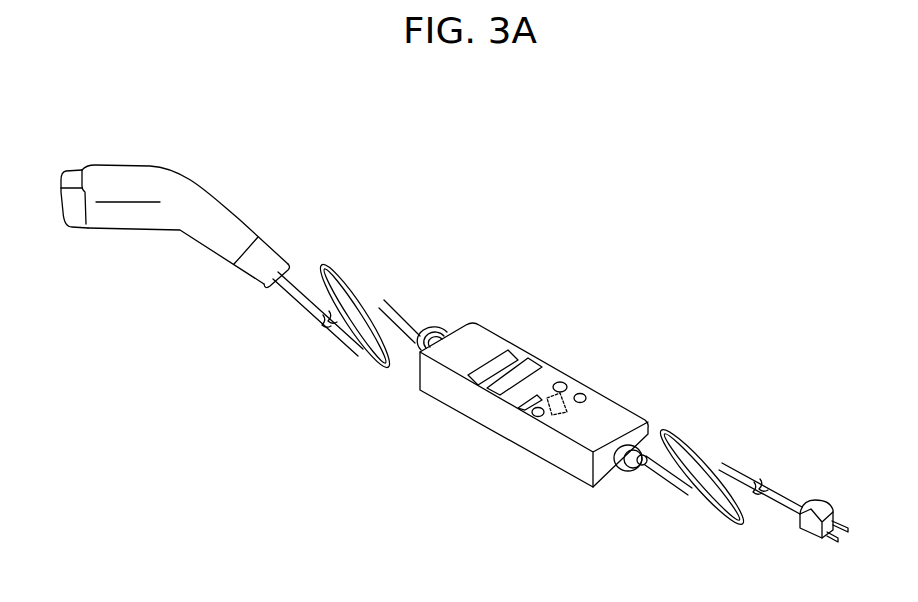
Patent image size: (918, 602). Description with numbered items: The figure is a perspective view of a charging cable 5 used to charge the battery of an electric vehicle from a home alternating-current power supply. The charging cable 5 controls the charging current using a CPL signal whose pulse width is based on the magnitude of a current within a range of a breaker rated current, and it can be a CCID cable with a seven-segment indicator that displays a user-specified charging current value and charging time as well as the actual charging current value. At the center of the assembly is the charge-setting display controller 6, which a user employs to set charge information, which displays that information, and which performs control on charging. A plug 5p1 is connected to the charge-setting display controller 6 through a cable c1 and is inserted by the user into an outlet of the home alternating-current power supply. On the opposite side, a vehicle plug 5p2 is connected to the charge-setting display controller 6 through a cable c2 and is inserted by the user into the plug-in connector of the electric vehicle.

The charging cable 5 is at (476, 194).
The plug 5p1 is at (822, 512).
The vehicle plug 5p2 is at (152, 169).
The charge-setting display controller 6 is at (572, 357).
The cable c1 is at (723, 466).
The cable c2 is at (351, 345).